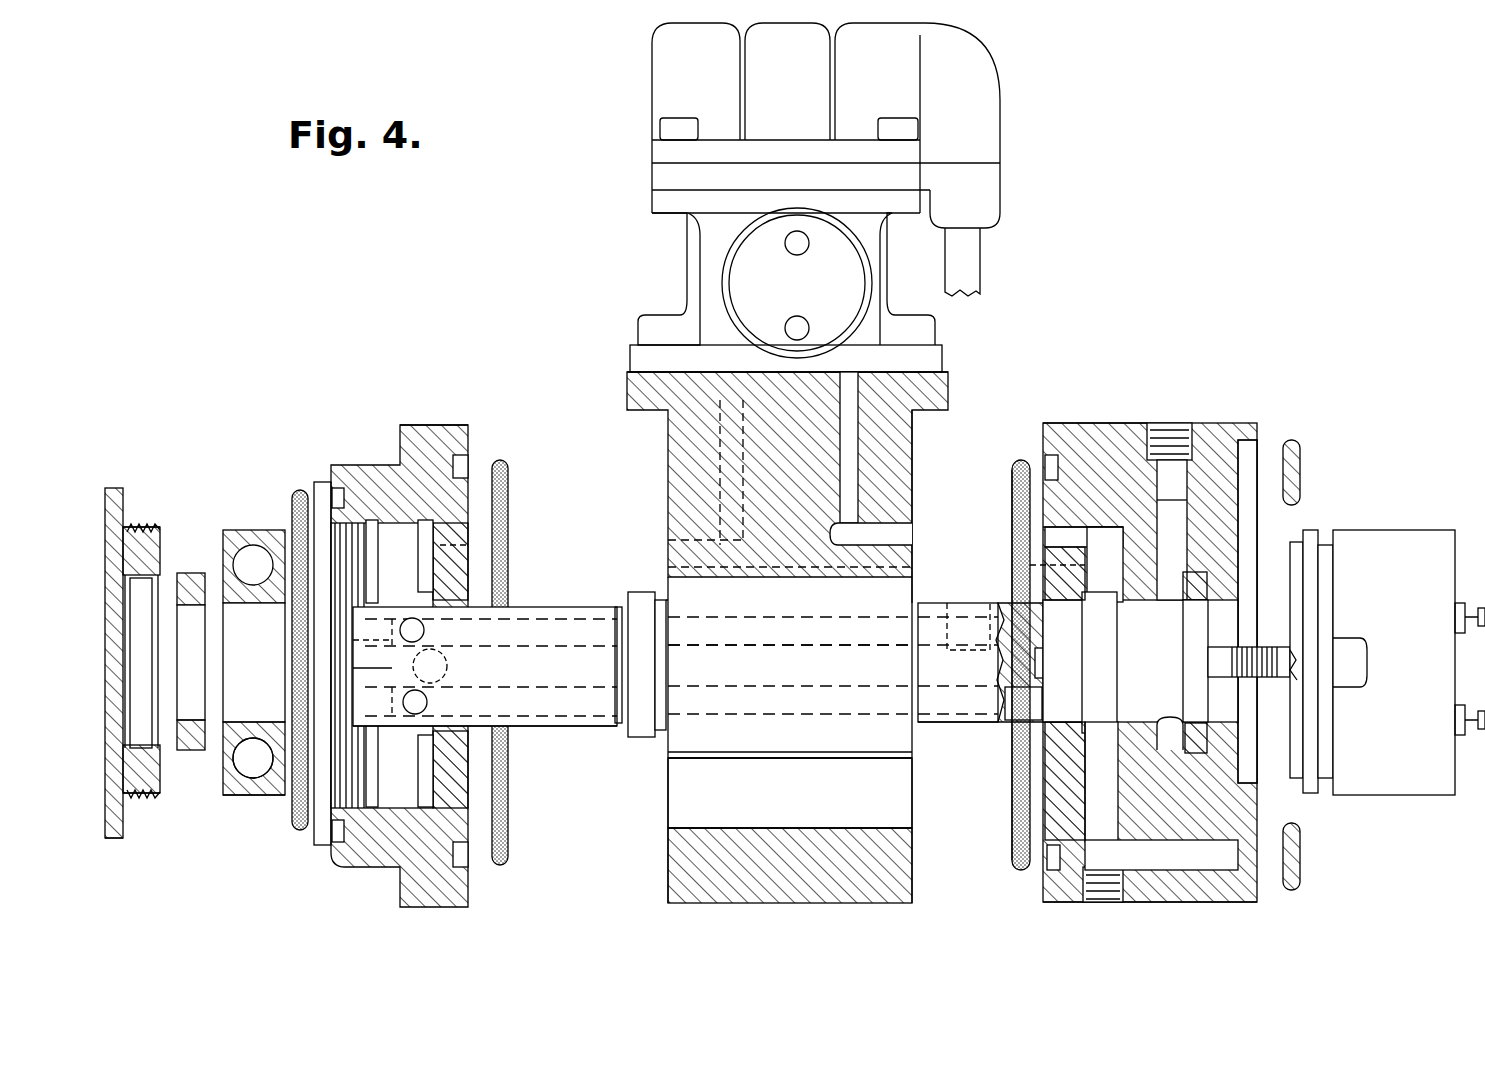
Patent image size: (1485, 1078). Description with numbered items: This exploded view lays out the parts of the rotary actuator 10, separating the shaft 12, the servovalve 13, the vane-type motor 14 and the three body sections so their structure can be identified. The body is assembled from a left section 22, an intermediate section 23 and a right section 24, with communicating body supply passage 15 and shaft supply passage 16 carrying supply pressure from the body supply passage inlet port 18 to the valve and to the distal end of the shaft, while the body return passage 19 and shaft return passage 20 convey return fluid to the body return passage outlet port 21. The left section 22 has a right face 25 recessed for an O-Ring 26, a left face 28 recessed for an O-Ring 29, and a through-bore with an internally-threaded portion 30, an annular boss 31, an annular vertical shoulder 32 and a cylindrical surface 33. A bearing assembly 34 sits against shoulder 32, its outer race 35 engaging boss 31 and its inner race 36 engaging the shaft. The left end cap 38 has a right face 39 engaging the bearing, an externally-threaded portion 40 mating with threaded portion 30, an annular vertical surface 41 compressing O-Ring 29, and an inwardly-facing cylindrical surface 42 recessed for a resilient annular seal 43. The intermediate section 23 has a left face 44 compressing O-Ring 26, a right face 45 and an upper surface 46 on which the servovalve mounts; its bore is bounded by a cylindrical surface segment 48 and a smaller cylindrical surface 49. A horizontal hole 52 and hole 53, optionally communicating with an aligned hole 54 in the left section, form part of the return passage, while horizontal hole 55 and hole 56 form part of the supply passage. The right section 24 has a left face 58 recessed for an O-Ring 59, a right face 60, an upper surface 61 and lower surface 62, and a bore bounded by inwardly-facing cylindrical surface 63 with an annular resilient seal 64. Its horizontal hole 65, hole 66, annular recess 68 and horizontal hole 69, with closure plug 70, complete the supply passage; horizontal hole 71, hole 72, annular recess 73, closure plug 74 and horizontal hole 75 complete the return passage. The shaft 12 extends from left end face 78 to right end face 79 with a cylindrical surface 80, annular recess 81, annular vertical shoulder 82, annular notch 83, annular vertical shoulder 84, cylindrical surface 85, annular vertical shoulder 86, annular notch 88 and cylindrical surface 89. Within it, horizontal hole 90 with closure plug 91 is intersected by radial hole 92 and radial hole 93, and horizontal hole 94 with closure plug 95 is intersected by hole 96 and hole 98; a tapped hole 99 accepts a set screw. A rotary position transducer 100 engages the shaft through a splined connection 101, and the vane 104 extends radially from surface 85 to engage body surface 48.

The rotary actuator 10 is at (1162, 185).
The shaft 12 is at (570, 598).
The servovalve 13 is at (688, 238).
The vane-type motor 14 is at (700, 830).
The body supply passage 15 is at (1072, 527).
The shaft supply passage 16 is at (765, 645).
The body supply passage inlet port 18 is at (1258, 885).
The body return passage 19 is at (1190, 505).
The shaft return passage 20 is at (790, 712).
The body return passage outlet port 21 is at (1265, 450).
The left section 22 is at (430, 425).
The intermediate section 23 is at (790, 905).
The right section 24 is at (1085, 423).
The right face 25 is at (470, 435).
The O-Ring 26 is at (505, 460).
The left face 28 is at (316, 480).
The O-Ring 29 is at (300, 490).
The internally-threaded portion 30 is at (350, 790).
The annular boss 31 is at (387, 663).
The annular vertical shoulder 32 is at (430, 520).
The cylindrical surface 33 is at (425, 582).
The bearing assembly 34 is at (235, 528).
The outer race 35 is at (235, 790).
The inner race 36 is at (262, 725).
The left end cap 38 is at (118, 490).
The right face 39 is at (160, 790).
The externally-threaded portion 40 is at (140, 800).
The annular vertical surface 41 is at (125, 505).
The inwardly-facing cylindrical surface 42 is at (138, 643).
The resilient annular seal 43 is at (190, 568).
The left face 44 is at (668, 455).
The right face 45 is at (914, 438).
The upper surface 46 is at (650, 366).
The cylindrical surface segment 48 is at (800, 825).
The cylindrical surface 49 is at (725, 583).
The horizontal hole 52 is at (770, 545).
The hole 53 is at (740, 406).
The aligned hole 54 is at (460, 545).
The horizontal hole 55 is at (898, 535).
The hole 56 is at (845, 445).
The left face 58 is at (1030, 440).
The O-Ring 59 is at (1020, 460).
The right face 60 is at (1257, 435).
The upper surface 61 is at (1140, 420).
The lower surface 62 is at (1170, 905).
The inwardly-facing cylindrical surface 63 is at (1195, 755).
The annular resilient seal 64 is at (1195, 622).
The horizontal hole 65 is at (1190, 840).
The hole 66 is at (1065, 693).
The annular recess 68 is at (1115, 610).
The horizontal hole 69 is at (1050, 537).
The closure plug 70 is at (1105, 905).
The horizontal hole 71 is at (1190, 529).
The hole 72 is at (1157, 500).
The annular recess 73 is at (1170, 748).
The closure plug 74 is at (1168, 420).
The horizontal hole 75 is at (1050, 565).
The left end face 78 is at (355, 668).
The right end face 79 is at (1100, 695).
The cylindrical surface 80 is at (540, 728).
The annular recess 81 is at (625, 732).
The annular vertical shoulder 82 is at (618, 602).
The annular notch 83 is at (645, 740).
The annular vertical shoulder 84 is at (657, 598).
The cylindrical surface 85 is at (790, 658).
The annular vertical shoulder 86 is at (910, 580).
The annular notch 88 is at (920, 724).
The cylindrical surface 89 is at (975, 735).
The horizontal hole 90 is at (825, 620).
The closure plug 91 is at (355, 640).
The radial hole 92 is at (952, 600).
The radial hole 93 is at (425, 630).
The horizontal hole 94 is at (860, 688).
The closure plug 95 is at (375, 725).
The hole 96 is at (1039, 662).
The hole 98 is at (428, 702).
The tapped hole 99 is at (448, 665).
The rotary position transducer 100 is at (1445, 530).
The splined connection 101 is at (1265, 620).
The vane 104 is at (790, 781).